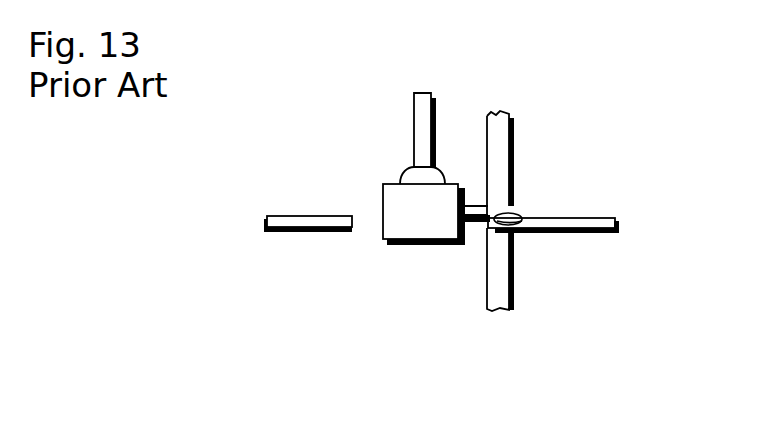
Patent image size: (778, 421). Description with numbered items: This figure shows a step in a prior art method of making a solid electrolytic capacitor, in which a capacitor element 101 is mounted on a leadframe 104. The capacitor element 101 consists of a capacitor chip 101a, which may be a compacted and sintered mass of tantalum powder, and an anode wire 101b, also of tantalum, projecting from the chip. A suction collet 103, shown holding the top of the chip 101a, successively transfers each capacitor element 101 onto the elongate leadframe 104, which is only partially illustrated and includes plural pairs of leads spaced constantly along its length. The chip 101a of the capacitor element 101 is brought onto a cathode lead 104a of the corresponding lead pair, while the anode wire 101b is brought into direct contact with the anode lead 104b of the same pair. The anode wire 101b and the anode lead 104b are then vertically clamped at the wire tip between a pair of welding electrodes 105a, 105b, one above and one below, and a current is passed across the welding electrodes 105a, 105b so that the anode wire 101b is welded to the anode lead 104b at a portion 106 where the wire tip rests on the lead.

The capacitor element 101 is at (452, 148).
The capacitor chip 101a is at (397, 195).
The anode wire 101b is at (517, 210).
The suction collet 103 is at (418, 132).
The leadframe 104 is at (441, 305).
The cathode lead 104a is at (329, 228).
The anode lead 104b is at (567, 228).
The welding electrode 105a is at (502, 143).
The welding electrode 105b is at (497, 267).
The welded portion 106 is at (500, 222).